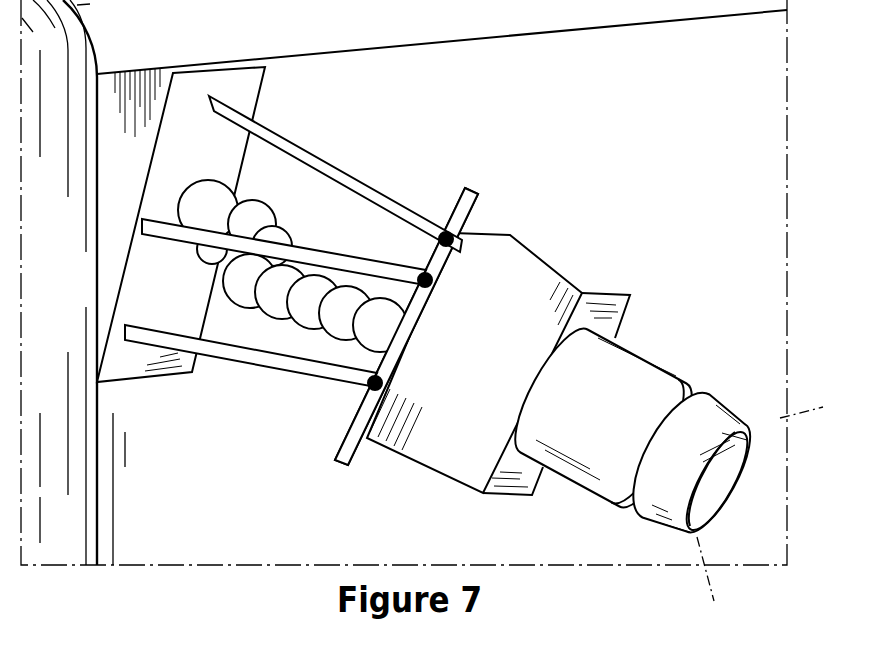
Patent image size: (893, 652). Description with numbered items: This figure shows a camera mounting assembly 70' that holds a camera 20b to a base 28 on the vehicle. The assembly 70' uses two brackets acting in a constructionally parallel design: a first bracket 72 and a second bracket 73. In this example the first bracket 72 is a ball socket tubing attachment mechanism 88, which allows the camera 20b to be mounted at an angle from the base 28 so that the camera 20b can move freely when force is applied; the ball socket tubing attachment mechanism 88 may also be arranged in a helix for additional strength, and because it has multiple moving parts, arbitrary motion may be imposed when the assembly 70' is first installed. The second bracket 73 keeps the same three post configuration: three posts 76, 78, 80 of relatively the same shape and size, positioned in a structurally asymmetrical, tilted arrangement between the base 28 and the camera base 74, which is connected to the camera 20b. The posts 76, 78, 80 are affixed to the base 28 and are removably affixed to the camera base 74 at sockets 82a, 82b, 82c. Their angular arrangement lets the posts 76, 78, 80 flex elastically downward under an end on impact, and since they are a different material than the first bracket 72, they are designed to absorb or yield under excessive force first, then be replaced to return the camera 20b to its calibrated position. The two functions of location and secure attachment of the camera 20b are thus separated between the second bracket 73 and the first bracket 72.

The base 28 is at (182, 68).
The post 80 is at (281, 137).
The ball socket tubing attachment mechanism 88 is at (236, 206).
The camera mounting assembly 70' is at (496, 291).
The camera base 74 is at (476, 190).
The socket 82c is at (447, 240).
The post 78 is at (286, 244).
The first bracket 72 is at (267, 323).
The socket 82b is at (427, 280).
The socket 82a is at (380, 384).
The second bracket 73 is at (212, 381).
The post 76 is at (277, 372).
The camera 20b is at (651, 324).